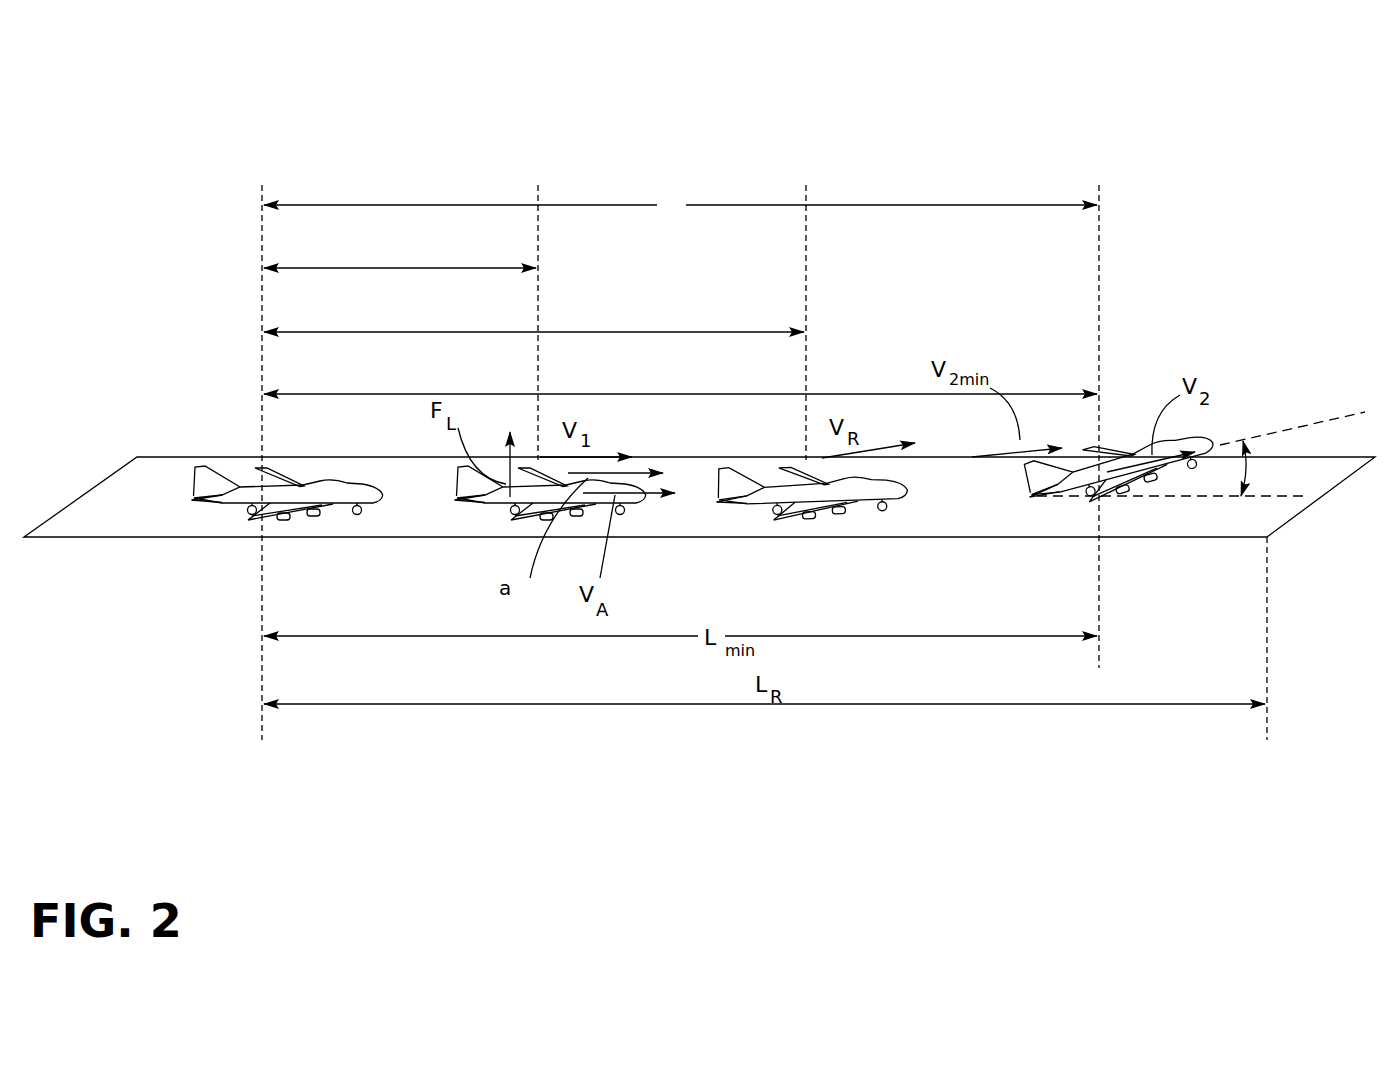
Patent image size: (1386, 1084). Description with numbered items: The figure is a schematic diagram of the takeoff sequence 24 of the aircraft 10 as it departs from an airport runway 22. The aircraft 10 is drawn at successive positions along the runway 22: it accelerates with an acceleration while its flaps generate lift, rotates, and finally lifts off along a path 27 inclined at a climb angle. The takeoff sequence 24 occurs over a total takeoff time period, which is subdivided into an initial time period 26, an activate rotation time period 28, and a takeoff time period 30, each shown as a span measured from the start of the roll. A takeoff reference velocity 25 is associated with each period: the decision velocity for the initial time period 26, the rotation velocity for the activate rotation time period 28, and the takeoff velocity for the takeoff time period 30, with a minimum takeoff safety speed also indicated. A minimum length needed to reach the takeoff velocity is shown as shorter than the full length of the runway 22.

The aircraft 10 is at (258, 492).
The airport runway 22 is at (132, 513).
The takeoff sequence 24 is at (428, 155).
The takeoff reference velocity 25 is at (1118, 445).
The initial time period 26 is at (400, 253).
The path 27 is at (1273, 428).
The activate rotation time period 28 is at (534, 318).
The takeoff time period 30 is at (680, 380).